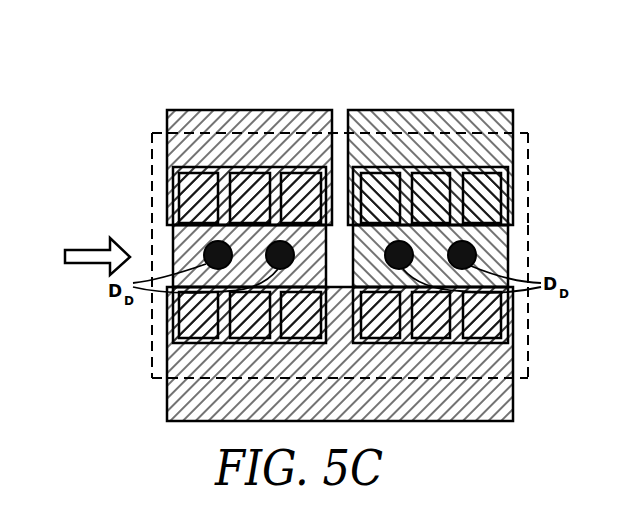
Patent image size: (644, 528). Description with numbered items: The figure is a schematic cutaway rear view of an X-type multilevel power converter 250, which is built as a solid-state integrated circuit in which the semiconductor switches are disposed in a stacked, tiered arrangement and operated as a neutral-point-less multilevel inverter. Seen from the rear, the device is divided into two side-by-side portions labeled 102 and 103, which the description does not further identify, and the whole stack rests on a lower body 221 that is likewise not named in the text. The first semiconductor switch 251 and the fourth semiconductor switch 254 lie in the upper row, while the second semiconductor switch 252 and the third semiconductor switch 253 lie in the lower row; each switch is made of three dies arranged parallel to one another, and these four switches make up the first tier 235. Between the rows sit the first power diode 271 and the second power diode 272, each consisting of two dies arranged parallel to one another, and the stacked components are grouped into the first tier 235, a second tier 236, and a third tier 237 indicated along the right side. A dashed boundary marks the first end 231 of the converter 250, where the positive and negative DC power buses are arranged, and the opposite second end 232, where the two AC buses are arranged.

The X-type multilevel power converter 250 is at (338, 217).
The first die 102 is at (188, 136).
The second die 103 is at (489, 136).
The first semiconductor switch 251 is at (163, 184).
The second semiconductor switch 252 is at (164, 320).
The third semiconductor switch 253 is at (519, 321).
The fourth semiconductor switch 254 is at (520, 186).
The first power diode 271 is at (479, 249).
The second power diode 272 is at (204, 252).
The substrate layer 221 is at (338, 355).
The first end 231 is at (531, 138).
The second end 232 is at (531, 367).
The first tier 235 is at (531, 307).
The second tier 236 is at (531, 242).
The third tier 237 is at (531, 210).